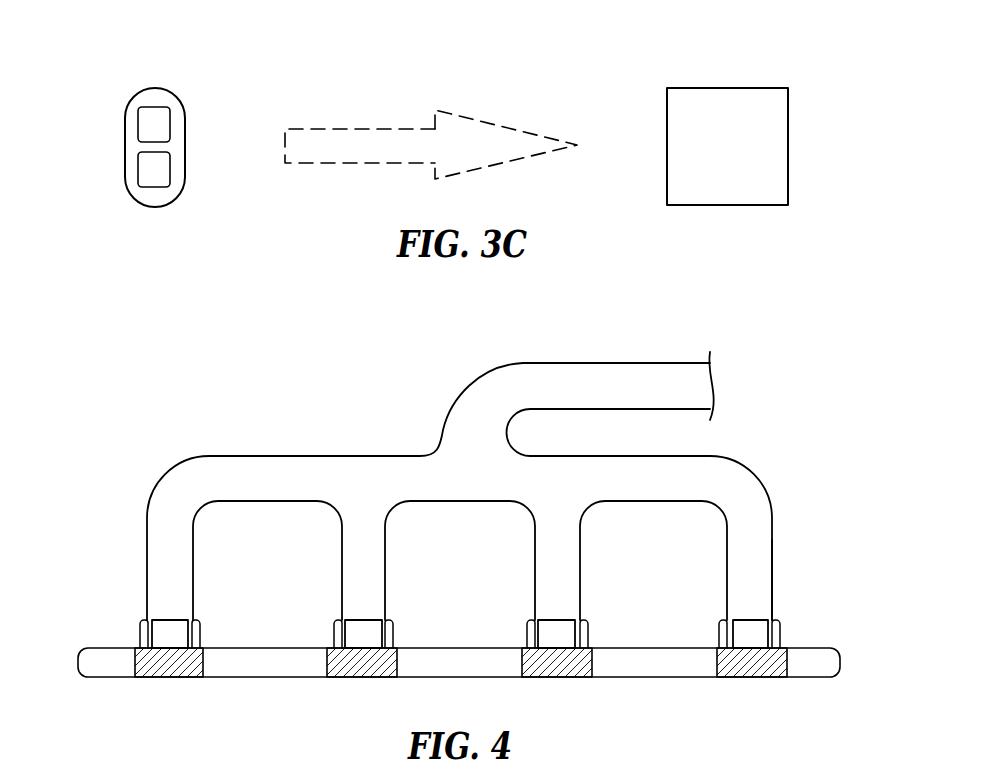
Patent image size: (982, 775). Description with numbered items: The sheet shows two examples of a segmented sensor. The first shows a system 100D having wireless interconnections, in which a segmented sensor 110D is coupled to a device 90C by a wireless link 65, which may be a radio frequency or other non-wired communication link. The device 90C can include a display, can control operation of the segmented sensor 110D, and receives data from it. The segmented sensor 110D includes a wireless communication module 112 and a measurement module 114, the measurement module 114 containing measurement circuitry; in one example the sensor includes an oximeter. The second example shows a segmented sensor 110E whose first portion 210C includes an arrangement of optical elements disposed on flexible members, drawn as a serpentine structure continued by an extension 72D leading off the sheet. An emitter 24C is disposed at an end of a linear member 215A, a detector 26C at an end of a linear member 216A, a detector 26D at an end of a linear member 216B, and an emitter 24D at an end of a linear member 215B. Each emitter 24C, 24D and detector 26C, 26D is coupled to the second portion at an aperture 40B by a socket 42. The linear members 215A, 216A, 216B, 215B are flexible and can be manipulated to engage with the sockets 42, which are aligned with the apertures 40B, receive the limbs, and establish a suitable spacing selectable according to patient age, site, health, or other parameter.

In FIG. 3C, the segmented sensor 110D is at (153, 90).
In FIG. 3C, the wireless communication module 112 is at (138, 123).
In FIG. 3C, the measurement module 114 is at (138, 167).
In FIG. 3C, the system 100D is at (501, 113).
In FIG. 3C, the wireless link 65 is at (493, 168).
In FIG. 3C, the device 90C is at (788, 145).
In FIG. 4, the segmented sensor 110E is at (68, 455).
In FIG. 4, the first portion 210C is at (315, 456).
In FIG. 4, the tube outlet extension 72D is at (620, 363).
In FIG. 4, the linear member 215A is at (193, 558).
In FIG. 4, the linear member 216A is at (385, 558).
In FIG. 4, the linear member 216B is at (580, 558).
In FIG. 4, the linear member 215B is at (772, 558).
In FIG. 4, the emitter 24C is at (172, 620).
In FIG. 4, the detector 26C is at (363, 620).
In FIG. 4, the detector 26D is at (557, 620).
In FIG. 4, the emitter 24D is at (750, 620).
In FIG. 4, the socket 42 is at (138, 626).
In FIG. 4, the aperture 40B is at (153, 665).